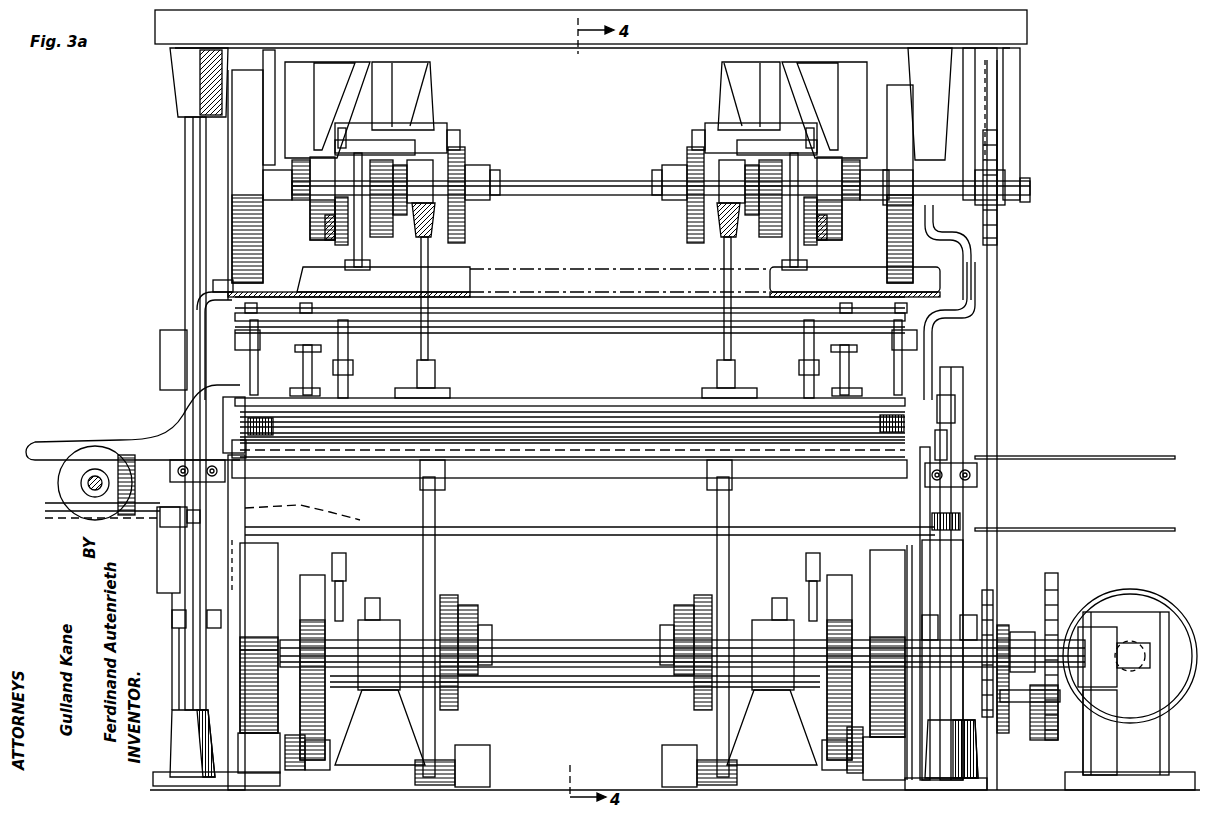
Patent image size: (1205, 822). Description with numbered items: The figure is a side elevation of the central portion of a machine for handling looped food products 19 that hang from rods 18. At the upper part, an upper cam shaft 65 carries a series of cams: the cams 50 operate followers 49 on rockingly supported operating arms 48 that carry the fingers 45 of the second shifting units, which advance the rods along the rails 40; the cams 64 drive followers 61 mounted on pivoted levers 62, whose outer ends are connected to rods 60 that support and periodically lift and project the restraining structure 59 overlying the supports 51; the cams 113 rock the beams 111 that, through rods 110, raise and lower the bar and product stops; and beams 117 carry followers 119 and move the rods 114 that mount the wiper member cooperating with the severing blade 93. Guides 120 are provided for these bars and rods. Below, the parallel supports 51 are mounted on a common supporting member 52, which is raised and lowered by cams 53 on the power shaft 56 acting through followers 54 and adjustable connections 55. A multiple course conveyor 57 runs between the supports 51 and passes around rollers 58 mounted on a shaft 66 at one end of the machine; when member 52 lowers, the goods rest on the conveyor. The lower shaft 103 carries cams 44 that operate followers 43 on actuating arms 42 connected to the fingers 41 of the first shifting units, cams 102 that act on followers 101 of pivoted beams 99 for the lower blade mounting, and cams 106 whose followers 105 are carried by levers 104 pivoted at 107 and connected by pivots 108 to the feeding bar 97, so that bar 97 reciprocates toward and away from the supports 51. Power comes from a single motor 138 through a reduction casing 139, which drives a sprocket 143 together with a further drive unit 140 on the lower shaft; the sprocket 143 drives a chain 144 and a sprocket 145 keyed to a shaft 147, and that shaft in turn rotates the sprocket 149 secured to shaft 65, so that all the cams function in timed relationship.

The rods 18 is at (560, 432).
The looped products 19 is at (950, 424).
The rails 40 is at (245, 430).
The fingers 41 is at (240, 447).
The actuating arms 42 is at (228, 545).
The followers 43 is at (250, 640).
The cams 44 is at (572, 640).
The fingers 45 is at (223, 413).
The operating arms 48 is at (976, 290).
The followers 49 is at (250, 175).
The cams 50 is at (572, 176).
The supports 51 is at (300, 512).
The supporting member 52 is at (555, 540).
The cams 53 is at (400, 640).
The follower 54 is at (380, 610).
The adjustable connection 55 is at (347, 566).
The power shaft 56 is at (560, 689).
The multiple course conveyor 57 is at (160, 510).
The rollers 58 is at (136, 485).
The restraining structure 59 is at (524, 416).
The rods 60 is at (435, 362).
The follower 61 is at (462, 133).
The levers 62 is at (432, 123).
The cams 64 is at (458, 244).
The shaft 65 is at (548, 181).
The shaft 66 is at (88, 483).
The severing blade 93 is at (480, 400).
The feeding bar 97 is at (514, 478).
The beams 99 is at (290, 738).
The followers 101 is at (310, 772).
The cams 102 is at (318, 580).
The shaft 103 is at (585, 640).
The levers 104 is at (435, 562).
The follower 105 is at (476, 634).
The cams 106 is at (458, 600).
The pivots 107 is at (418, 762).
The pivots 108 is at (446, 478).
The rods 110 is at (364, 258).
The beams 111 is at (345, 128).
The cams 113 is at (418, 230).
The rods 114 is at (349, 362).
The beams 117 is at (318, 235).
The followers 119 is at (576, 282).
The guides 120 is at (354, 370).
The motor 138 is at (1140, 598).
The gear reduction device 139 is at (1123, 693).
The gear 140 is at (1040, 740).
The sprocket 143 is at (1058, 590).
The chain 144 is at (998, 333).
The sprocket 145 is at (997, 230).
The shaft 147 is at (1030, 187).
The sprocket 149 is at (876, 235).